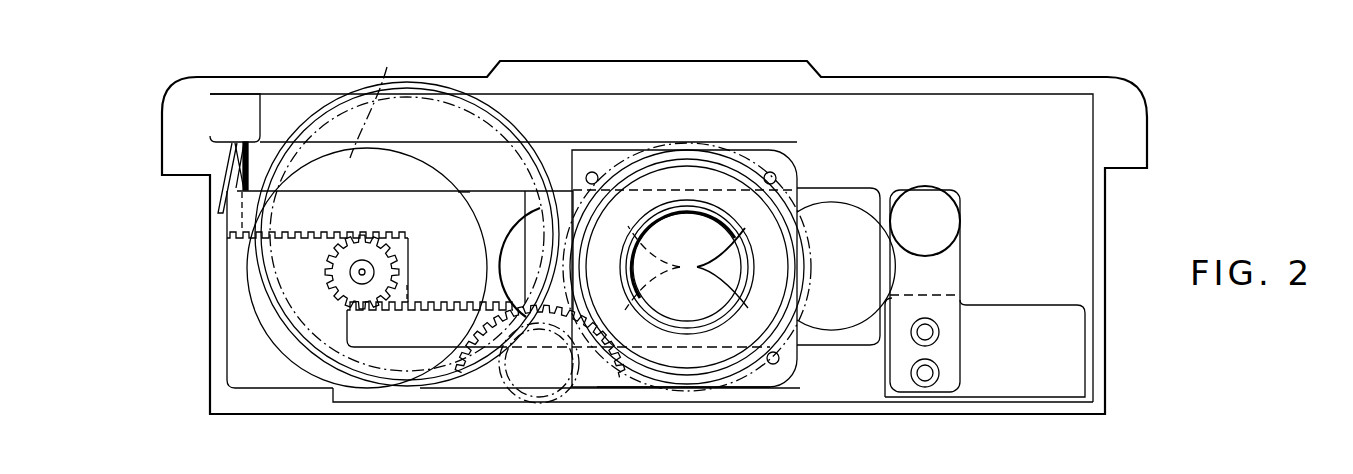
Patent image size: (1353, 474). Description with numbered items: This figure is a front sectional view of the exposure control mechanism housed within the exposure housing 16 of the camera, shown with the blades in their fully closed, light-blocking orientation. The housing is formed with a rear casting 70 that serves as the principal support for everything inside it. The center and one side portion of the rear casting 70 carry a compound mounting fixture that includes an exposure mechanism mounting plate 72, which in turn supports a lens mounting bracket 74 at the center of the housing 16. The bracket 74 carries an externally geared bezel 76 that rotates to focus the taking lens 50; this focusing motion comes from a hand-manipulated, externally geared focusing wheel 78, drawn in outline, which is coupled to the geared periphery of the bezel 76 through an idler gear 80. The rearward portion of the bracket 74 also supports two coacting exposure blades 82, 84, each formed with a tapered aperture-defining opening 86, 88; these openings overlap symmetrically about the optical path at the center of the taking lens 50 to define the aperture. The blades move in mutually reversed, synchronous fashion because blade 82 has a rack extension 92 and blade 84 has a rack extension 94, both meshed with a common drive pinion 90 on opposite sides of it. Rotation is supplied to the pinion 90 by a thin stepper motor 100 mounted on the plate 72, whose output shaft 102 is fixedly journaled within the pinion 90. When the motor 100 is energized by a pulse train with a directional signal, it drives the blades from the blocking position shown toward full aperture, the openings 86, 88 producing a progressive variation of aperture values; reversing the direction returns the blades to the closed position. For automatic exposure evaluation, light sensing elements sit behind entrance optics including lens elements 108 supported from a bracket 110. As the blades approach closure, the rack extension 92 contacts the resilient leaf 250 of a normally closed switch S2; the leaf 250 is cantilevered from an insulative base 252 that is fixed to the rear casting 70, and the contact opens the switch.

The normally closed switch S2 is at (262, 68).
The exposure housing 16 is at (1162, 197).
The taking lens 50 is at (703, 227).
The rear casting 70 is at (993, 405).
The exposure mechanism mounting plate 72 is at (552, 160).
The lens mounting bracket 74 is at (767, 388).
The externally geared bezel 76 is at (758, 152).
The focusing wheel 78 is at (482, 368).
The idler gear 80 is at (577, 377).
The exposure mechanism blade 82 is at (460, 192).
The exposure mechanism blade 84 is at (817, 339).
The tapered aperture defining opening 86 is at (500, 250).
The tapered aperture defining opening 88 is at (857, 318).
The drive pinion 90 is at (400, 262).
The rack extension 92 is at (351, 203).
The rack extension 94 is at (356, 328).
The stepper motor 100 is at (390, 43).
The output shaft 102 is at (366, 280).
The lens elements 108 is at (930, 203).
The bracket 110 is at (945, 357).
The resilient leaf 250 is at (237, 191).
The insulative base 252 is at (237, 156).